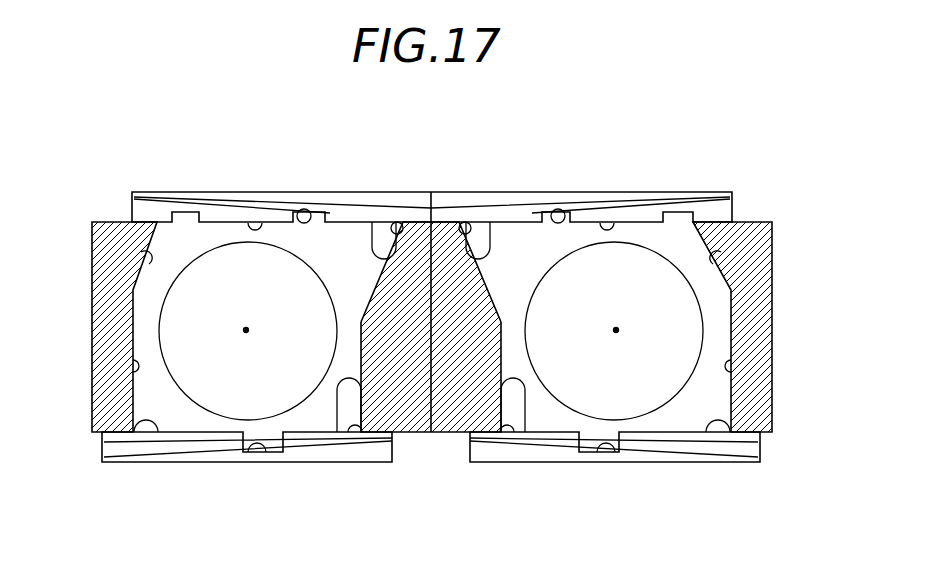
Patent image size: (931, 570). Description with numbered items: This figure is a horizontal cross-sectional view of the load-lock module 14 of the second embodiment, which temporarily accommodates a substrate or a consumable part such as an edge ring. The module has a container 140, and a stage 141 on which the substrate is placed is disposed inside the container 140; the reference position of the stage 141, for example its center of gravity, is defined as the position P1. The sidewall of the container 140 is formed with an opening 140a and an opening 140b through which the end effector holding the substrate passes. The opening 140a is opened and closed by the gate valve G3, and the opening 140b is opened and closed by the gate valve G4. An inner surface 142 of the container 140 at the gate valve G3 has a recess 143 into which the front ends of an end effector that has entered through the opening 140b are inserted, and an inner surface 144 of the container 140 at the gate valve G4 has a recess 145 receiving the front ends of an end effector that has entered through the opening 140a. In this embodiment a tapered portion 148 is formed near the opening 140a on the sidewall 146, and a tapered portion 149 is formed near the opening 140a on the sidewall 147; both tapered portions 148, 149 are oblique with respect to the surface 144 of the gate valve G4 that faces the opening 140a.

The load-lock module 14 is at (122, 222).
The gate valve G3 is at (223, 192).
The inner surface 142 is at (255, 222).
The recess 143 is at (305, 210).
The tapered portion 149 is at (380, 240).
The container 140 is at (92, 345).
The opening 140a is at (460, 224).
The opening 140b is at (356, 436).
The tapered portion 148 is at (140, 256).
The position P1 is at (246, 330).
The stage 141 is at (160, 312).
The sidewall 146 is at (130, 366).
The inner surface 144 is at (140, 420).
The gate valve G4 is at (199, 462).
The recess 145 is at (257, 452).
The sidewall 147 is at (349, 439).